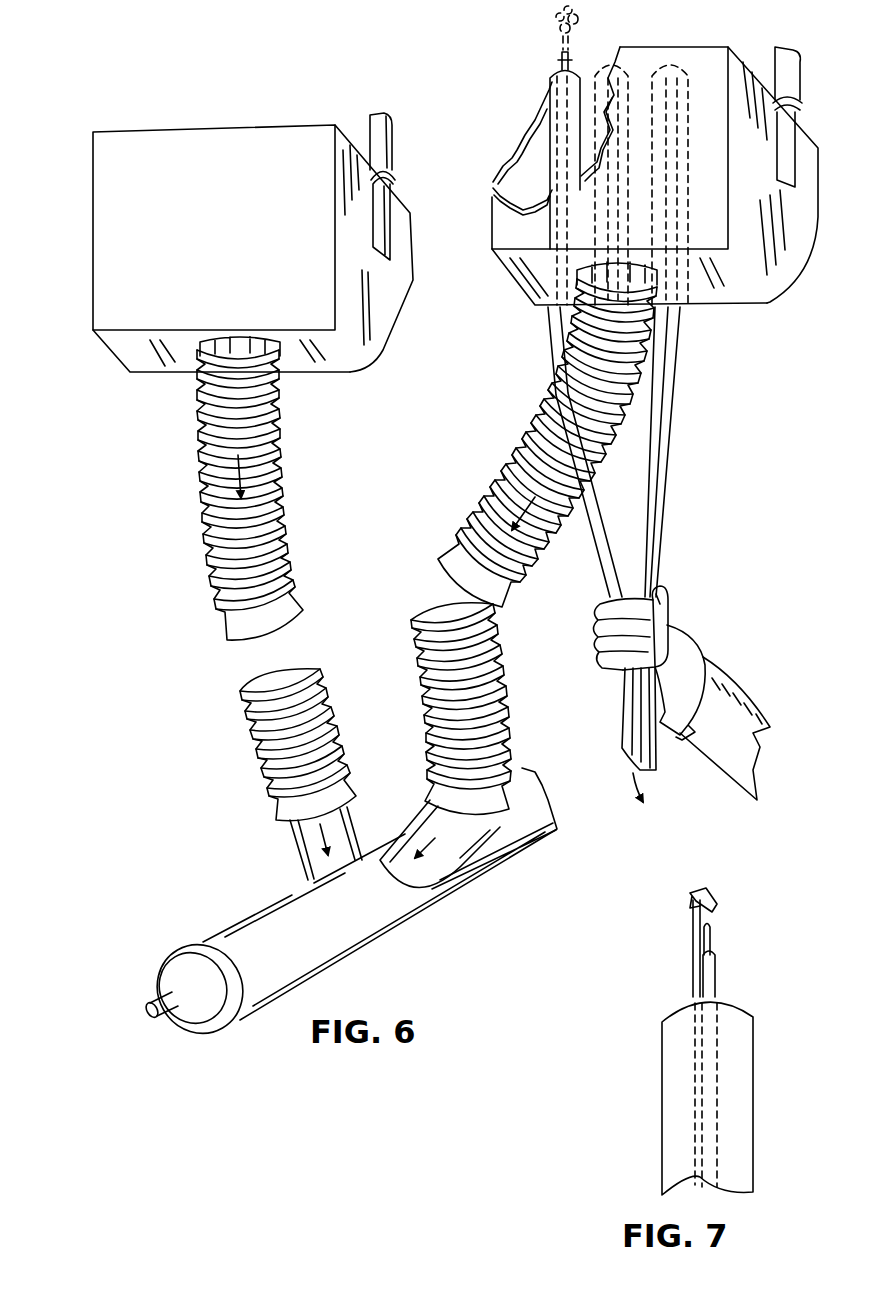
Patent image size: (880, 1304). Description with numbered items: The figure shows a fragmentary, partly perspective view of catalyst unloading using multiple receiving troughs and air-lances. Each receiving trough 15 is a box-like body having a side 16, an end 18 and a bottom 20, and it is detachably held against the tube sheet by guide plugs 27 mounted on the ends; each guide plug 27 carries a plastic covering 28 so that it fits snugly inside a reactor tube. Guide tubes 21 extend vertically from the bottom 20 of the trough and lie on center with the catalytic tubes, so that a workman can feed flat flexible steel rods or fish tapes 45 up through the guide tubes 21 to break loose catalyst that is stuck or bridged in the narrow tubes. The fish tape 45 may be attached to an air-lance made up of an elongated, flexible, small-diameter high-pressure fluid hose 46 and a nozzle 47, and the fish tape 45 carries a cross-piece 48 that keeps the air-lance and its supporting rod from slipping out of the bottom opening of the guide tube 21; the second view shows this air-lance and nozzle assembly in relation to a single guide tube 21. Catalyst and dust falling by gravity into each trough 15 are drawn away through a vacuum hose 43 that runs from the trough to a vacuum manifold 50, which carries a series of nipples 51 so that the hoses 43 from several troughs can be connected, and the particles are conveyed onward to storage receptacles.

In FIG. 6, the receiving trough 15 is at (86, 229).
In FIG. 6, the side 16 is at (226, 251).
In FIG. 6, the end 18 is at (385, 319).
In FIG. 6, the bottom 20 is at (317, 363).
In FIG. 6, the guide tube 21 is at (550, 88).
In FIG. 7, the guide tube 21 is at (748, 1040).
In FIG. 6, the guide plug 27 is at (386, 210).
In FIG. 6, the plastic covering 28 is at (393, 131).
In FIG. 6, the vacuum hose 43 is at (303, 600).
In FIG. 6, the fish tape 45 is at (664, 450).
In FIG. 7, the fish tape 45 is at (695, 950).
In FIG. 6, the high-pressure fluid hose 46 is at (573, 62).
In FIG. 7, the high-pressure fluid hose 46 is at (710, 970).
In FIG. 7, the nozzle 47 is at (710, 933).
In FIG. 7, the cross-piece 48 is at (715, 907).
In FIG. 6, the vacuum manifold 50 is at (292, 918).
In FIG. 6, the nipple 51 is at (340, 827).